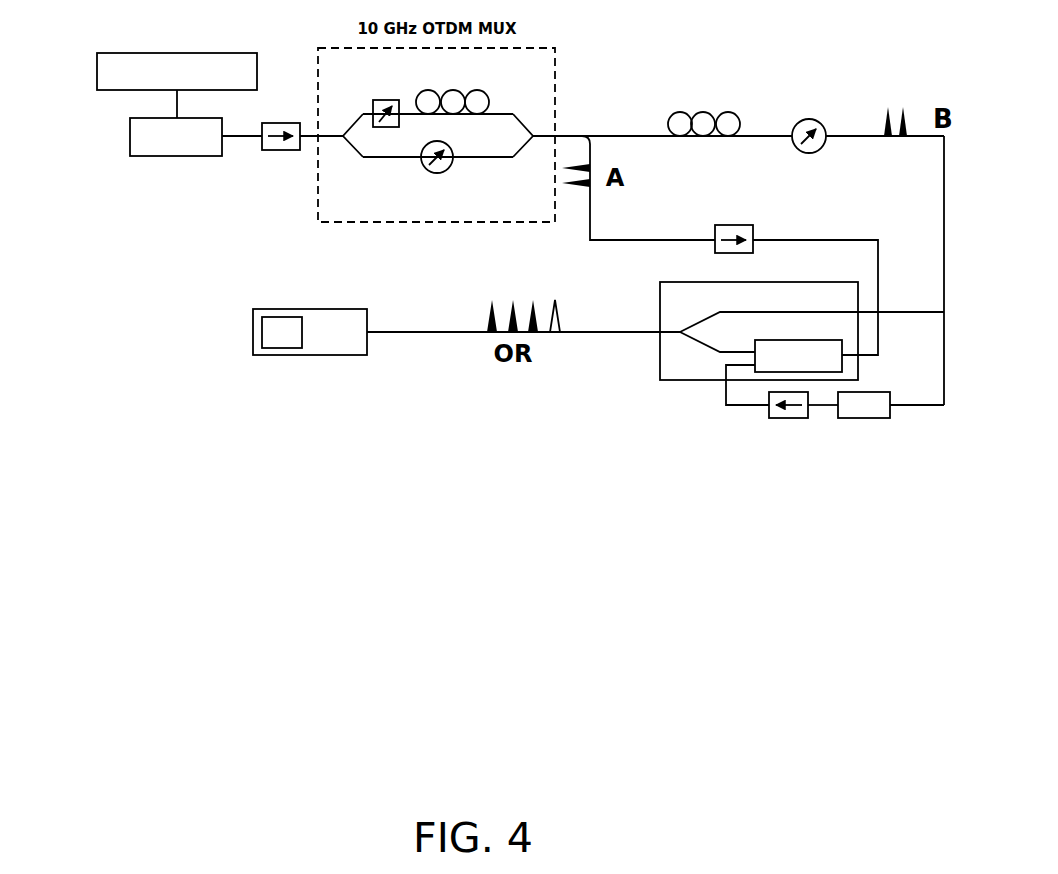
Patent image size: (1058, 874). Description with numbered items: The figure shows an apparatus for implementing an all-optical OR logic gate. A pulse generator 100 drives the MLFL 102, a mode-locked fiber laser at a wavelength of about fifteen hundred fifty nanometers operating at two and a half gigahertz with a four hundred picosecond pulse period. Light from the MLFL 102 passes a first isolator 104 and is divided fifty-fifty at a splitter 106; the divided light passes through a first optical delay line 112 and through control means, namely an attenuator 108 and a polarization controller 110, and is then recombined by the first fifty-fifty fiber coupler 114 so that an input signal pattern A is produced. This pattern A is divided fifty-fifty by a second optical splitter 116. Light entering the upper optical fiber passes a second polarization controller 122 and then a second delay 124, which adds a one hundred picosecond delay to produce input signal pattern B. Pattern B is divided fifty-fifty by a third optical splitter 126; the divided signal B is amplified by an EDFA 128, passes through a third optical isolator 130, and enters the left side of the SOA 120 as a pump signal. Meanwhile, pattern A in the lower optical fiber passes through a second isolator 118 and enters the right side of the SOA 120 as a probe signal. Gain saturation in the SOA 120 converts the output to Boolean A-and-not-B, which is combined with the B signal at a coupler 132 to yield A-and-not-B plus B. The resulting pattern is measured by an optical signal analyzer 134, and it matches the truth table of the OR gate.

The pulse generator 100 is at (97, 72).
The MLFL 102 is at (175, 156).
The first isolator 104 is at (281, 150).
The optical splitter 106 is at (343, 138).
The attenuator 108 is at (386, 100).
The polarization controller 110 is at (453, 90).
The first optical delay line 112 is at (437, 173).
The first 50:50 fiber coupler 114 is at (533, 138).
The second optical splitter 116 is at (582, 136).
The second isolator 118 is at (735, 225).
The SOA 120 is at (799, 340).
The second polarization controller 122 is at (703, 112).
The second delay 124 is at (810, 119).
The third optical splitter 126 is at (937, 312).
The EDFA 128 is at (865, 418).
The third optical isolator 130 is at (790, 418).
The optical coupler 132 is at (680, 333).
The optical signal analyzer 134 is at (311, 355).